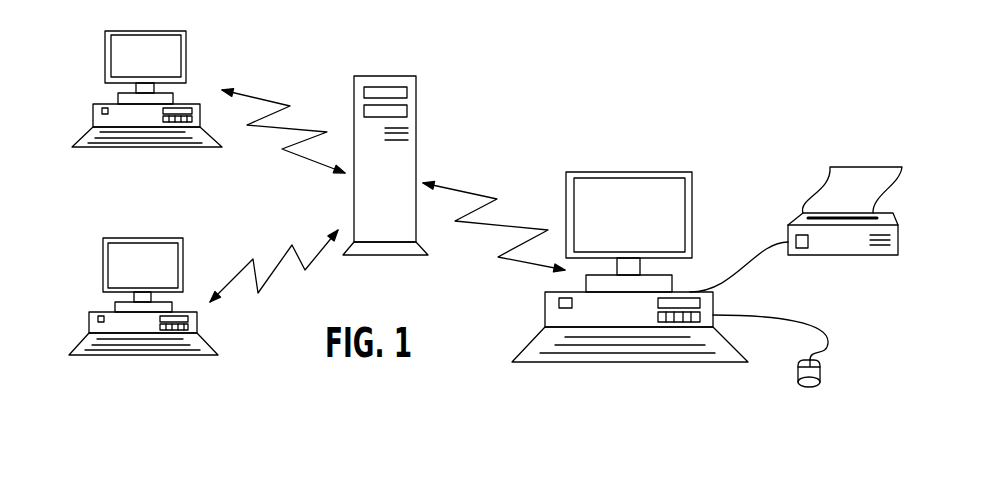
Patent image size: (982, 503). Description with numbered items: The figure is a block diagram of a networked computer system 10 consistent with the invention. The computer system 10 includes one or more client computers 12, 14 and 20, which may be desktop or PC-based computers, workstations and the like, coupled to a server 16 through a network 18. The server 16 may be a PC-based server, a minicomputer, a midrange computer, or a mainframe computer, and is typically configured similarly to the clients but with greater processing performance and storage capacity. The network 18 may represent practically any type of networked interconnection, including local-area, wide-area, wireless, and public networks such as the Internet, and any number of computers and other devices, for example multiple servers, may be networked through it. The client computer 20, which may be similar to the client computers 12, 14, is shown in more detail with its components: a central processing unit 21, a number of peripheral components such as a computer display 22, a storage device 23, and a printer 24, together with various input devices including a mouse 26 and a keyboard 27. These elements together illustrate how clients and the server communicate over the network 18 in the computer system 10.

The computer system 10 is at (552, 85).
The client computer 12 is at (105, 45).
The client computer 14 is at (103, 240).
The server 16 is at (372, 76).
The network 18 is at (282, 150).
The client computer 20 is at (683, 172).
The central processing unit 21 is at (600, 317).
The computer display 22 is at (602, 175).
The storage device 23 is at (675, 323).
The printer 24 is at (807, 220).
The mouse 26 is at (815, 377).
The keyboard 27 is at (533, 357).